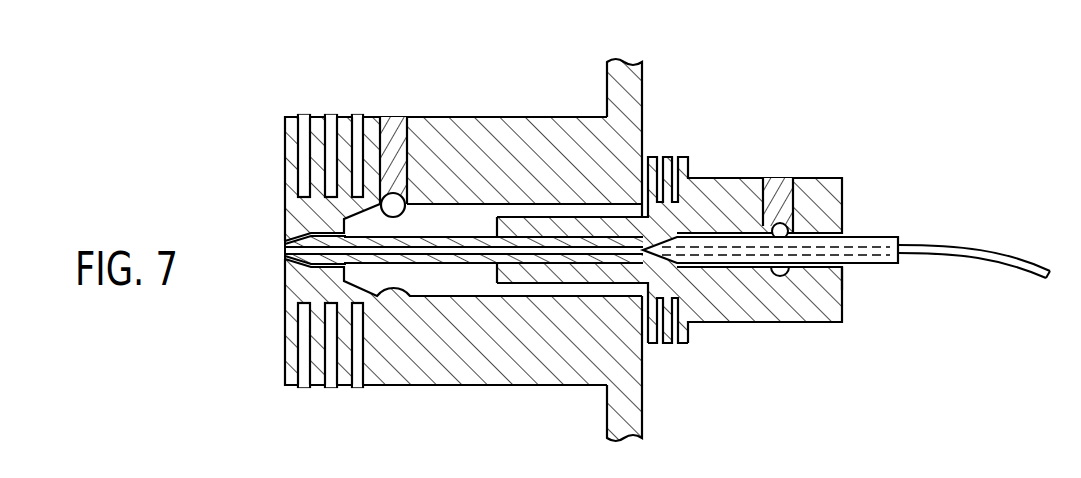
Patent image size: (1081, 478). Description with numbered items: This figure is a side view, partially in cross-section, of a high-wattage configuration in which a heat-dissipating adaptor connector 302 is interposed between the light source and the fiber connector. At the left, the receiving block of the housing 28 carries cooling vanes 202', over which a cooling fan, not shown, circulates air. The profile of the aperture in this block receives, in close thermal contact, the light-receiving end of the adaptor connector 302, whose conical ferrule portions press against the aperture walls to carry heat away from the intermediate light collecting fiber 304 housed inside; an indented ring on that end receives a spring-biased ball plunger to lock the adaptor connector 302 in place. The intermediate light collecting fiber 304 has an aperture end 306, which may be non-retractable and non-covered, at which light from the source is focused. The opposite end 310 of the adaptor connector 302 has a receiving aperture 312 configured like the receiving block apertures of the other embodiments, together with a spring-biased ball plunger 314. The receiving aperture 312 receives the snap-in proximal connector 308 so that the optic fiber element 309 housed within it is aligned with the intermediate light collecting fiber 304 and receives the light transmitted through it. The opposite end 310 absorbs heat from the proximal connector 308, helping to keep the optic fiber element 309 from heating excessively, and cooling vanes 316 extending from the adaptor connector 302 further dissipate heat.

The housing 28 is at (630, 88).
The cooling vanes 202' is at (276, 220).
The intermediate light collecting fiber 304 is at (470, 253).
The aperture end 306 is at (272, 251).
The adaptor connector 302 is at (718, 148).
The snap-in proximal connector 308 is at (878, 237).
The optic fiber element 309 is at (1020, 257).
The opposite end 310 is at (782, 258).
The receiving aperture 312 is at (846, 270).
The spring-biased ball plunger 314 is at (774, 226).
The cooling vanes 316 is at (651, 346).